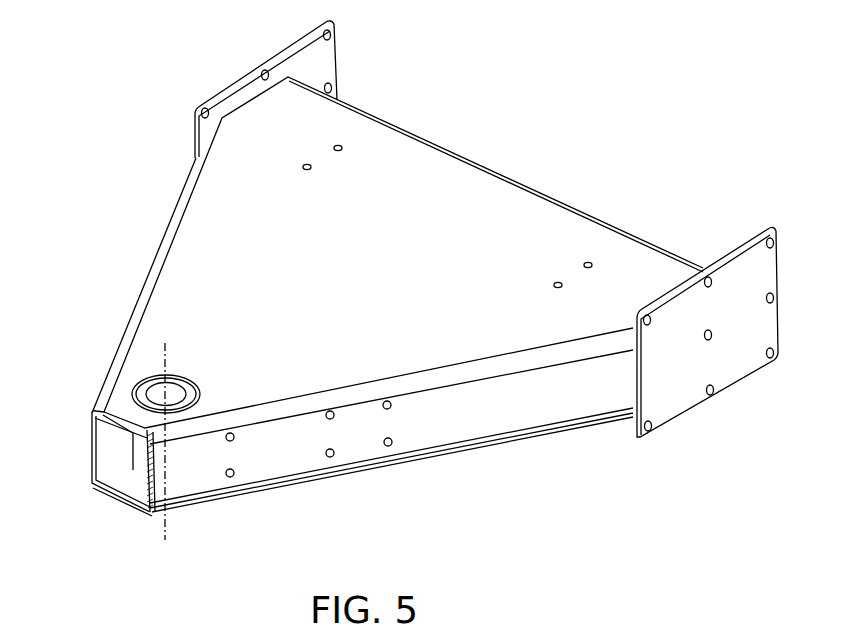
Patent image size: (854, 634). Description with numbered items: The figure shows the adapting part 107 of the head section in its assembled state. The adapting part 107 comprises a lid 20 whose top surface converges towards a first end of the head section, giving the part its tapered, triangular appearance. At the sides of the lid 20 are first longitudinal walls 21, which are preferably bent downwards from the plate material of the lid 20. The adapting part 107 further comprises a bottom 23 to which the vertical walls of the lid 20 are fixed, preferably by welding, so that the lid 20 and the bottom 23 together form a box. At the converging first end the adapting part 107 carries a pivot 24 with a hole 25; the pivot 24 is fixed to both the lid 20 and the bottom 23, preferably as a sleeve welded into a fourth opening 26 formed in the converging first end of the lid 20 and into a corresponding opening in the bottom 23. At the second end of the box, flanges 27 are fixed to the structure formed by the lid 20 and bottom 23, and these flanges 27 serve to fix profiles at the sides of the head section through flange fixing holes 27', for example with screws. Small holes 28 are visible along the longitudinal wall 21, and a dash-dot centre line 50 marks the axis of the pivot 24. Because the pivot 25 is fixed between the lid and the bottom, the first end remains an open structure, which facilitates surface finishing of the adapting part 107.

The adapting part 107 is at (635, 82).
The lid 20 is at (367, 128).
The first longitudinal walls 21 is at (542, 397).
The bottom 23 is at (137, 492).
The pivot 24 is at (143, 470).
The hole 25 is at (178, 388).
The fourth opening 26 is at (132, 397).
The flanges 27 is at (457, 234).
The flange fixing holes 27' is at (692, 456).
The fastener holes 28 is at (388, 442).
The axis 50 is at (167, 527).